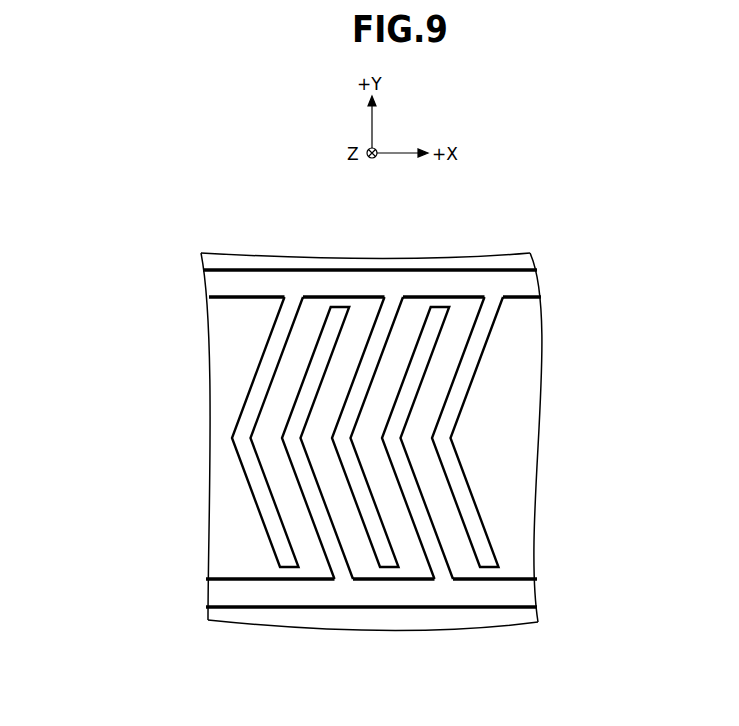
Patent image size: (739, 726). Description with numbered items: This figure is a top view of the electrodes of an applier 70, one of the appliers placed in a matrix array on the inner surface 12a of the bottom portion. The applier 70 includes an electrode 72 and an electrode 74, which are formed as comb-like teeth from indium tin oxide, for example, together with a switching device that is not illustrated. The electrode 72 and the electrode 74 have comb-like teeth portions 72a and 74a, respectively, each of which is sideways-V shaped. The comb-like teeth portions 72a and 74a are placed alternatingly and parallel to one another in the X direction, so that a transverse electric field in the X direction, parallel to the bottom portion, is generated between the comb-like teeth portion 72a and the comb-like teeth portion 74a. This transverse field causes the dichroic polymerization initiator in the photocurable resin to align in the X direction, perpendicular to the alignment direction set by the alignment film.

The applier 70 is at (524, 227).
The inner surface 12a is at (520, 477).
The electrode 74 is at (255, 269).
The electrode 72 is at (340, 608).
The comb-like teeth portion 74a is at (289, 568).
The comb-like teeth portion 72a is at (338, 306).